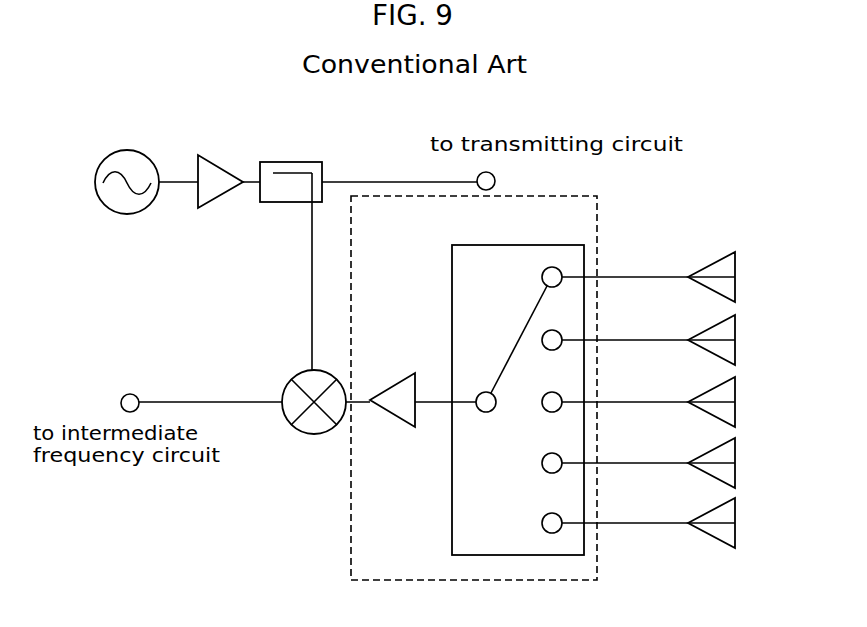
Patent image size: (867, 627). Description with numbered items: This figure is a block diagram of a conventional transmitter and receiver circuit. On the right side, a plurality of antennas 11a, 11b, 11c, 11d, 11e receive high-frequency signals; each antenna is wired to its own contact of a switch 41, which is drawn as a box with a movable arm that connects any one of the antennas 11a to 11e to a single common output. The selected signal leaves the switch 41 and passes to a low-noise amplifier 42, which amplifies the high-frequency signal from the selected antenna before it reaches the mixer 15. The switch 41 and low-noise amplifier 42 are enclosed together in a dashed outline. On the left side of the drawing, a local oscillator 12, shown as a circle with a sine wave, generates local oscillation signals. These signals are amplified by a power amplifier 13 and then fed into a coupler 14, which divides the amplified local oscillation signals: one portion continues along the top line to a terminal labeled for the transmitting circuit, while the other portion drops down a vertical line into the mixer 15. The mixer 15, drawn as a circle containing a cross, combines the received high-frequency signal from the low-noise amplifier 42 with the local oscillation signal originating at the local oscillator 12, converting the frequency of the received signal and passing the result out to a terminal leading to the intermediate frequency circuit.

The antenna 11a is at (718, 262).
The antenna 11b is at (718, 325).
The antenna 11c is at (718, 387).
The antenna 11d is at (718, 448).
The antenna 11e is at (718, 508).
The local oscillator 12 is at (150, 160).
The power amplifier 13 is at (216, 158).
The coupler 14 is at (318, 162).
The mixer 15 is at (288, 384).
The switch 41 is at (512, 245).
The low-noise amplifier 42 is at (392, 388).